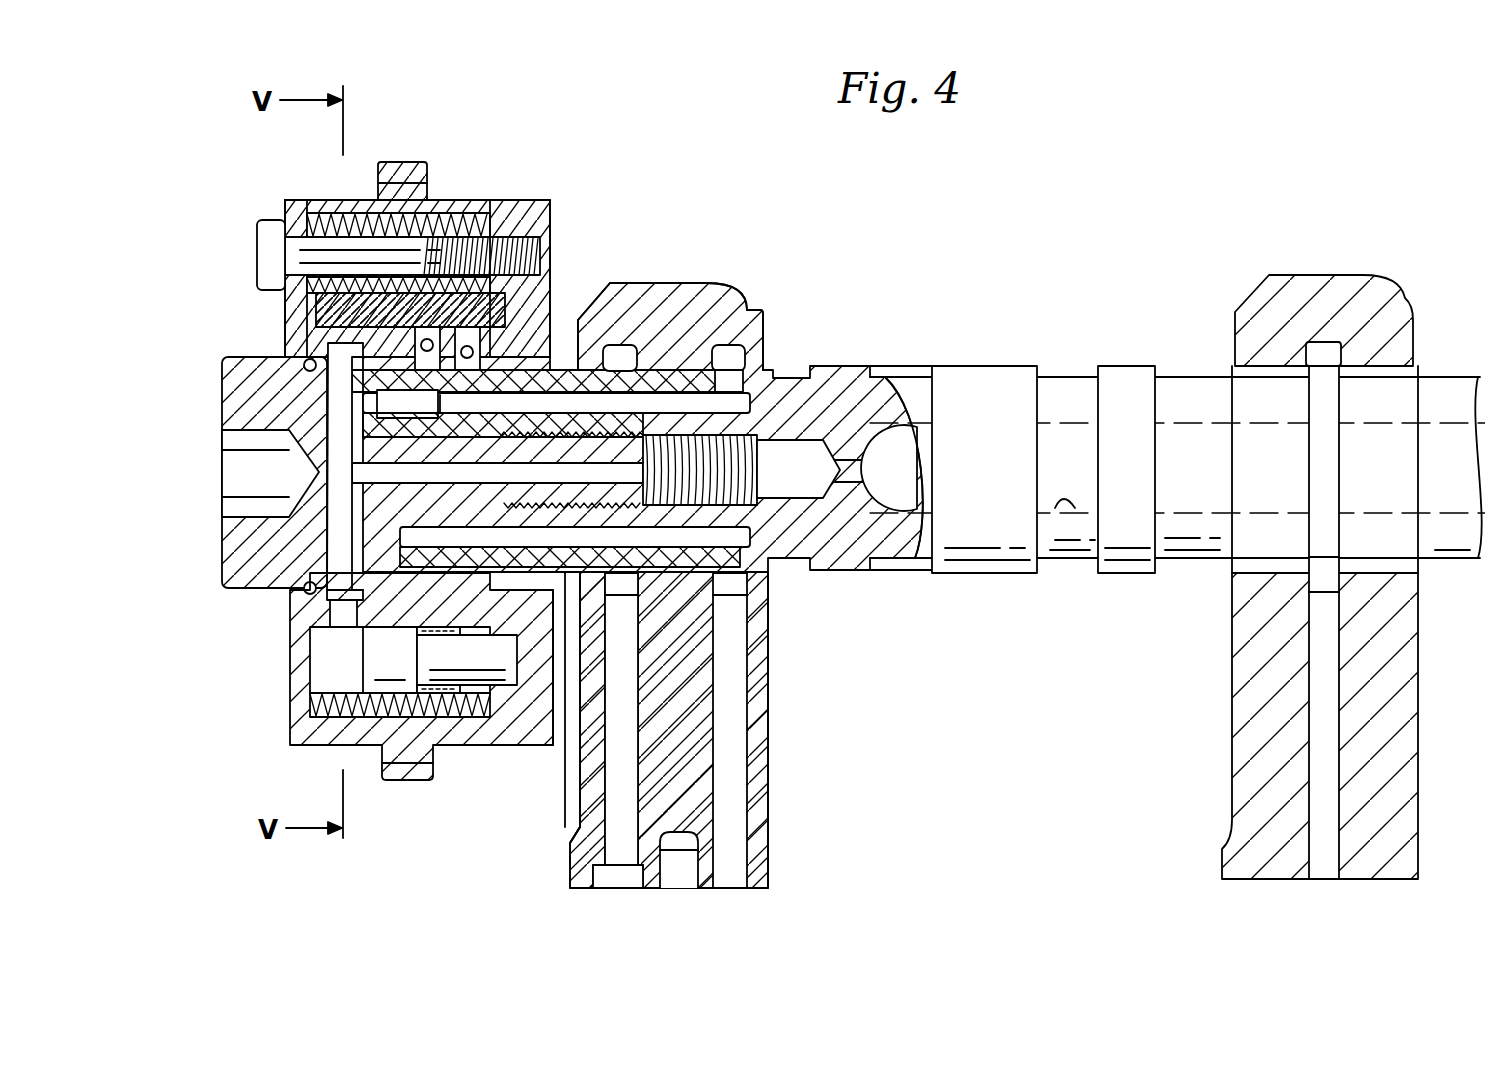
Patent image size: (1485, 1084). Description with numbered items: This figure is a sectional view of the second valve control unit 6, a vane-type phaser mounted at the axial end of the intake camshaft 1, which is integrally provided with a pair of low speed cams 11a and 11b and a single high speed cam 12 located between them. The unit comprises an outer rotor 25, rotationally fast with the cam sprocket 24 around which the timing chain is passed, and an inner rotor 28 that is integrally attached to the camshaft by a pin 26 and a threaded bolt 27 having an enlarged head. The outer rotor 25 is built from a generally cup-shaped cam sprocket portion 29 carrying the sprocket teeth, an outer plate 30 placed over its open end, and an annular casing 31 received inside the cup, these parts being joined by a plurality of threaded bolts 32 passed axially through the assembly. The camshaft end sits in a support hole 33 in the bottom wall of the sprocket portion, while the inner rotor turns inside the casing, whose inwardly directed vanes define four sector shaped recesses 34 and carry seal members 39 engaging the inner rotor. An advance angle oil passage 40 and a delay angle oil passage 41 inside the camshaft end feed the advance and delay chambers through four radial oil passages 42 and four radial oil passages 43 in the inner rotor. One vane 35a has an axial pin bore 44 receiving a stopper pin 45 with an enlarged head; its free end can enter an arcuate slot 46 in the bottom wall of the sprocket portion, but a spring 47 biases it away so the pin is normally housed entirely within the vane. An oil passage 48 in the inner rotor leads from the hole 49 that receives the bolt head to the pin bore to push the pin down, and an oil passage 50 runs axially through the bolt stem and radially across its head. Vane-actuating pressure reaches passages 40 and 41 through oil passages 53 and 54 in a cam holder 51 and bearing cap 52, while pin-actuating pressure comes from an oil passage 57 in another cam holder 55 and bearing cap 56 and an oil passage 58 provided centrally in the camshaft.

The intake camshaft 1 is at (1188, 377).
The second valve control unit 6 is at (247, 205).
The low speed cam 11a is at (828, 372).
The low speed cam 11b is at (1116, 366).
The high speed cam 12 is at (982, 366).
The cam sprocket 24 is at (393, 777).
The outer rotor 25 is at (417, 206).
The pin 26 is at (363, 400).
The threaded bolt 27 is at (222, 397).
The inner rotor 28 is at (360, 597).
The cam sprocket portion 29 is at (463, 200).
The outer plate 30 is at (293, 200).
The annular casing 31 is at (440, 216).
The threaded bolts 32 is at (530, 235).
The support hole 33 is at (566, 775).
The sector shaped recesses 34 is at (343, 298).
The vane 35a is at (318, 709).
The seal member 39 is at (483, 227).
The advance angle oil passage 40 is at (668, 397).
The delay angle oil passage 41 is at (733, 575).
The oil passages 42 is at (527, 317).
The oil passages 43 is at (528, 262).
The pin bore 44 is at (310, 683).
The stopper pin 45 is at (398, 694).
The arcuate slot 46 is at (502, 665).
The spring 47 is at (440, 693).
The oil passage 48 is at (343, 632).
The hole 49 is at (318, 585).
The oil passage 50 is at (337, 493).
The cam holder 51 is at (767, 756).
The bearing cap 52 is at (760, 320).
The oil passage 53 is at (740, 830).
The oil passage 54 is at (572, 838).
The cam holder 55 is at (1240, 716).
The bearing cap 56 is at (1380, 297).
The oil passage 57 is at (1324, 780).
The oil passage 58 is at (1058, 508).